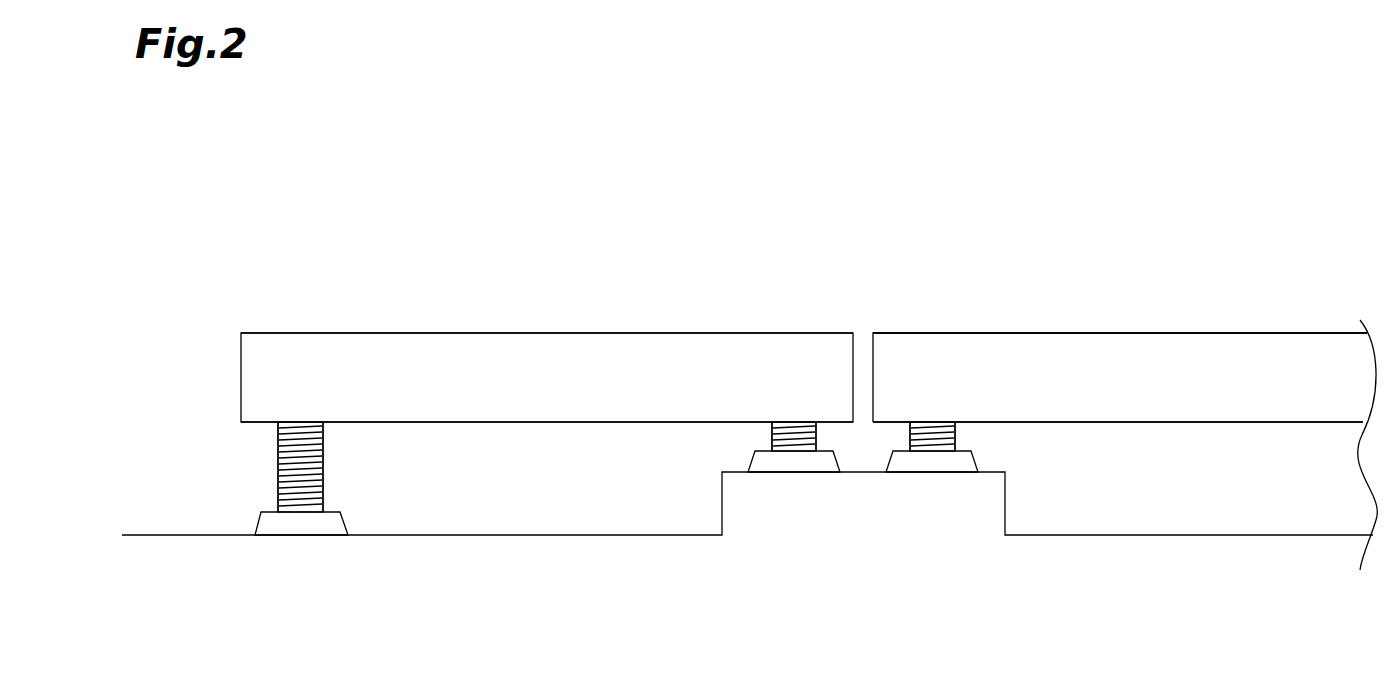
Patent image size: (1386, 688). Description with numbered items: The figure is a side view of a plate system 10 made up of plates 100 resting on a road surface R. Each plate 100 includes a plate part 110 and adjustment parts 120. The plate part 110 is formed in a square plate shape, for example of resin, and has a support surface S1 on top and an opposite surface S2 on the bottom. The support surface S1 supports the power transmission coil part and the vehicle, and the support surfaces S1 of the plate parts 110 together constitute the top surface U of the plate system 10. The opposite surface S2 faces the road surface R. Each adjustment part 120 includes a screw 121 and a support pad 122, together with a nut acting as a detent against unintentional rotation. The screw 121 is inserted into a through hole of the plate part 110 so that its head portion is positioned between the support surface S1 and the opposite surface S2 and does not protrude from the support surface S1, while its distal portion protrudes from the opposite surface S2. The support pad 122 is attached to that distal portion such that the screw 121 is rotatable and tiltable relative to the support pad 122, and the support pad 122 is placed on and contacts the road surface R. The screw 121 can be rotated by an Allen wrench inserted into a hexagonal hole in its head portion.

The plate system 10 is at (1298, 182).
The plate 100 is at (809, 404).
The plate part 110 is at (495, 355).
The adjustment part 120 is at (327, 483).
The screw 121 is at (278, 473).
The support pad 122 is at (287, 520).
The support surface S1 is at (378, 332).
The opposite surface S2 is at (445, 423).
The road surface R is at (168, 533).
The top surface U is at (1308, 330).